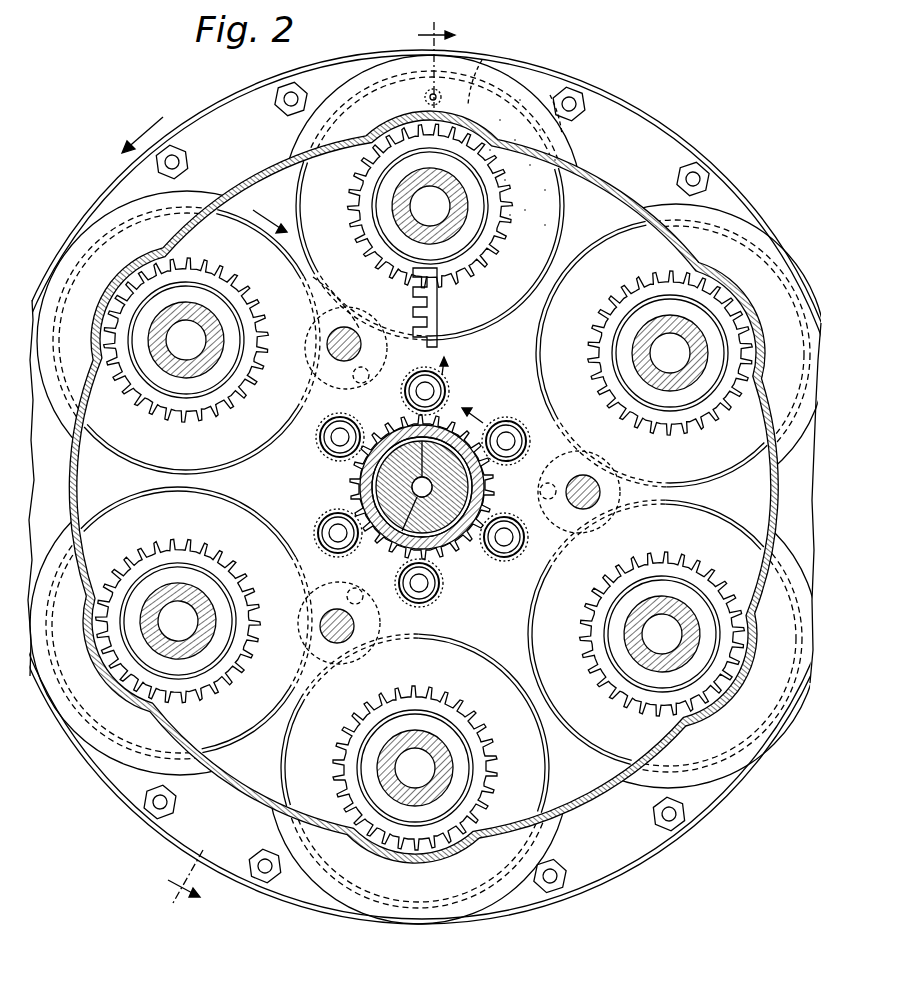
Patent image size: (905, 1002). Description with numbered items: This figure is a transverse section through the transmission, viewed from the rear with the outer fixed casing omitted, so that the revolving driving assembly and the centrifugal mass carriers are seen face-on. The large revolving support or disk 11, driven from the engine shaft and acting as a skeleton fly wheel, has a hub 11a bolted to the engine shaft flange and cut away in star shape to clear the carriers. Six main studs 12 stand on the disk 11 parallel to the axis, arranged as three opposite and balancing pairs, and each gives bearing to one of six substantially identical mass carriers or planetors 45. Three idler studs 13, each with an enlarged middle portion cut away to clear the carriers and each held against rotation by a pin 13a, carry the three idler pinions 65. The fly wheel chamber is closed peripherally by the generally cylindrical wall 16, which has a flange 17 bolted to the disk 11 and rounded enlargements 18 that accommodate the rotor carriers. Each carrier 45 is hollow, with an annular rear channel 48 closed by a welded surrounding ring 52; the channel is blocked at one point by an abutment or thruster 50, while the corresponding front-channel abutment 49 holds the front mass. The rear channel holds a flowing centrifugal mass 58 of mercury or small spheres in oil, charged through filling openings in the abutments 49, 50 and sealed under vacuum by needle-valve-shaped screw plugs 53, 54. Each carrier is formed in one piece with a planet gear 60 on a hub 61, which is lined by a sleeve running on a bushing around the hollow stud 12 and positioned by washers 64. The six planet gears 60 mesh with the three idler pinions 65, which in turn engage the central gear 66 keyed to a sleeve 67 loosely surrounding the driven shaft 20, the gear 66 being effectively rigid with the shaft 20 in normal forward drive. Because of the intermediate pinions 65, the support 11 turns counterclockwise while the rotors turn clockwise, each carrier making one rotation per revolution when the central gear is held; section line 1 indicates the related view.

The section line 1- 1 is at (309, 464).
The revolving support or disk 11 is at (633, 113).
The hub 11a is at (423, 487).
The main stud 12 is at (680, 325).
The idler stud 13 is at (588, 482).
The pin 13a is at (540, 494).
The peripheral wall 16 is at (582, 182).
The flange 17 is at (740, 203).
The rounded enlargement 18 is at (772, 252).
The driven shaft 20 is at (458, 540).
The mass carrier or rotor (planetor) 45 is at (601, 250).
The rear channel 48 is at (503, 117).
The abutment or thruster 49 is at (452, 332).
The abutment or thruster 50 is at (469, 72).
The surrounding ring 52 is at (546, 268).
The screw plug 53 is at (430, 326).
The screw plug 54 is at (424, 98).
The centrifugal mass 58 is at (546, 100).
The planet gear 60 is at (665, 278).
The hub 61 is at (628, 296).
The positioning washer 64 is at (617, 320).
The idler pinion 65 is at (571, 412).
The central gear 66 is at (362, 470).
The sleeve 67 is at (362, 490).